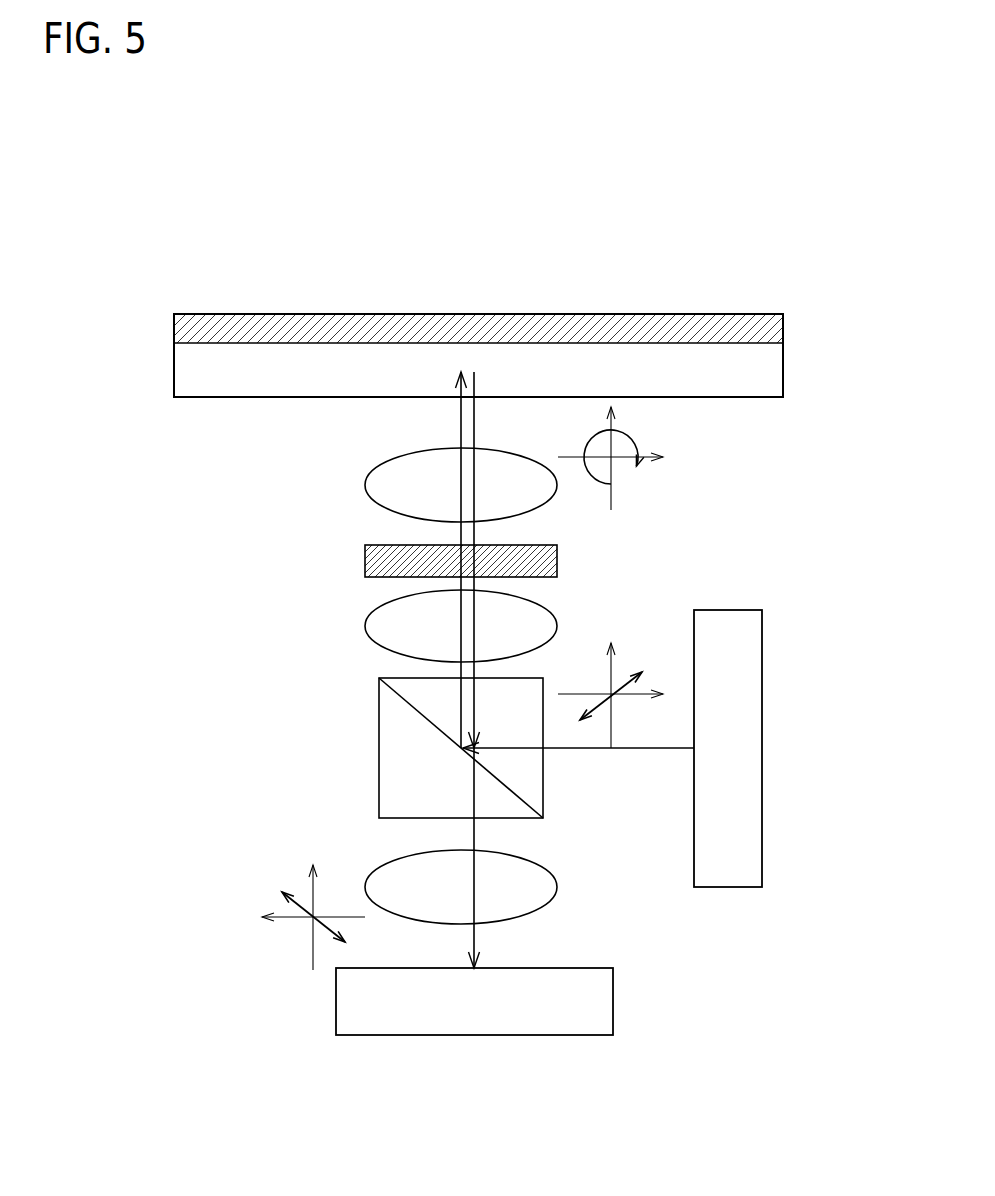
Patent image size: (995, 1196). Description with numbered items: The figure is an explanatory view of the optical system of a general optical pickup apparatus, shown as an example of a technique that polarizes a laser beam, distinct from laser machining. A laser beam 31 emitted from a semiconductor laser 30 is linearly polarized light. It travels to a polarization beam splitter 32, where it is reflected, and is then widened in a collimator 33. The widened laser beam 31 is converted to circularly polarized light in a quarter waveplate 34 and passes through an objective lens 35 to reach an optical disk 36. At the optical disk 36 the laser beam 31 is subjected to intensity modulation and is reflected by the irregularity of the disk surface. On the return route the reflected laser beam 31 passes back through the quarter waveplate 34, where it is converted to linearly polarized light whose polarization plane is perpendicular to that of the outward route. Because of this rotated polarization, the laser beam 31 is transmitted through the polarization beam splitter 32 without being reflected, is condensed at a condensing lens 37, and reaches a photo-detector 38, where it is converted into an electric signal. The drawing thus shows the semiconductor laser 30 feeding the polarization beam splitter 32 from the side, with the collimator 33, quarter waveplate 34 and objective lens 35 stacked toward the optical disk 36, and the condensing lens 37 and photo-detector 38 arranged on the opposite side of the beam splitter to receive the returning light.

The semiconductor laser 30 is at (725, 628).
The laser beam 31 is at (647, 752).
The polarization beam splitter 32 is at (531, 688).
The collimator 33 is at (548, 625).
The quarter waveplate 34 is at (540, 553).
The objective lens 35 is at (500, 470).
The optical disk 36 is at (773, 371).
The condensing lens 37 is at (537, 883).
The photo-detector 38 is at (601, 988).